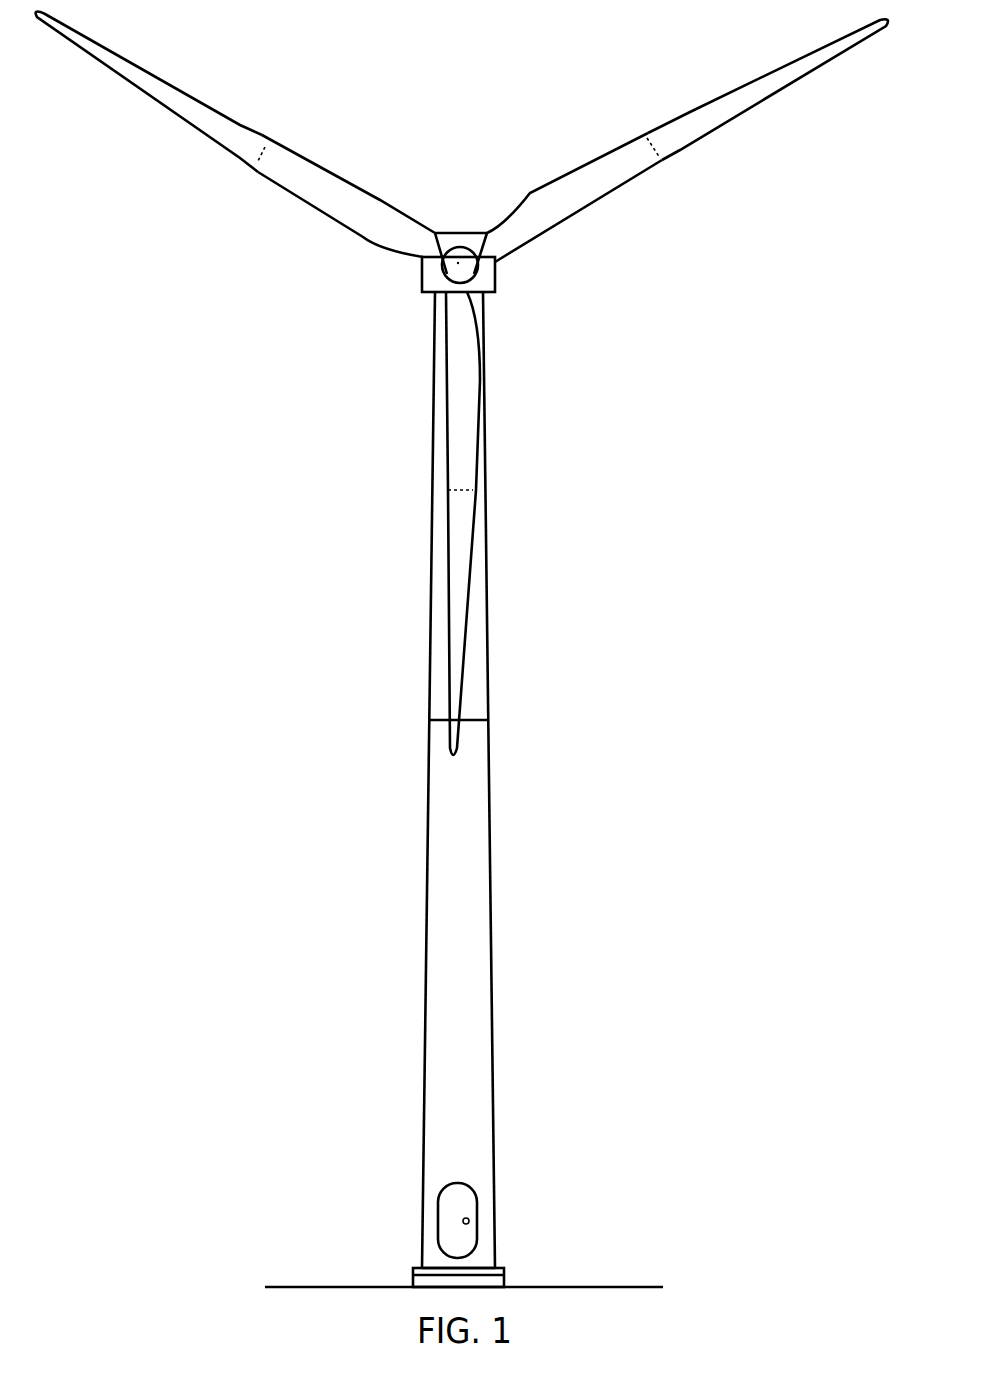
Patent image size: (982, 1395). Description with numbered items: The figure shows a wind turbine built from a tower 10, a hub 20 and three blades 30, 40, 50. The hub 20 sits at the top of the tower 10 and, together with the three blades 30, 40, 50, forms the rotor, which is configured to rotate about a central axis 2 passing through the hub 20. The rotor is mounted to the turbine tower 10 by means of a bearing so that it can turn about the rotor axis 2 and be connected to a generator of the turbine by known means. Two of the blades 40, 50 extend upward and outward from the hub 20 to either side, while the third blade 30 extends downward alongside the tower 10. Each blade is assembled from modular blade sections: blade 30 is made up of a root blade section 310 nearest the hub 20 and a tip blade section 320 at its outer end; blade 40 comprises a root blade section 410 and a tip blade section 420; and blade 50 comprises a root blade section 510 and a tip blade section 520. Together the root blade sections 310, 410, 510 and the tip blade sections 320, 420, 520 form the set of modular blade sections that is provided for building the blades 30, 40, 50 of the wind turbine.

The central axis 2 is at (458, 263).
The tower 10 is at (463, 870).
The hub 20 is at (466, 270).
The blade 30 is at (545, 523).
The root blade section 310 is at (463, 413).
The tip blade section 320 is at (463, 621).
The blade 40 is at (235, 165).
The root blade section 410 is at (307, 180).
The tip blade section 420 is at (175, 103).
The blade 50 is at (687, 140).
The root blade section 510 is at (595, 180).
The tip blade section 520 is at (738, 103).